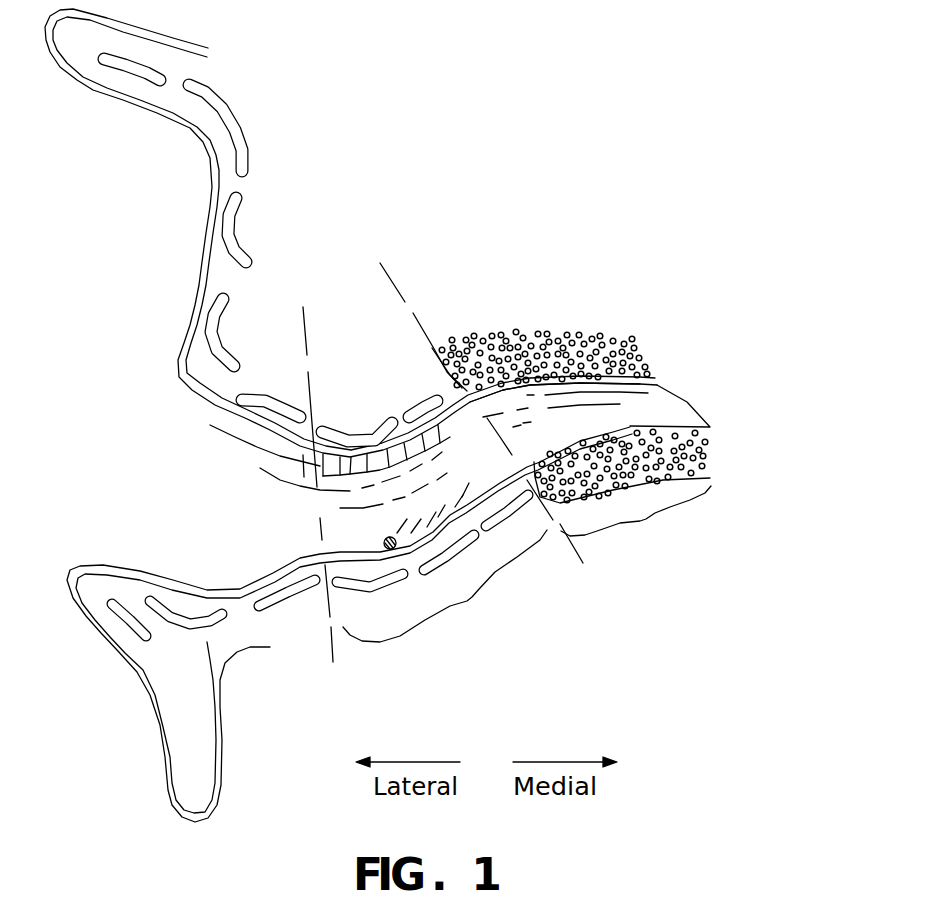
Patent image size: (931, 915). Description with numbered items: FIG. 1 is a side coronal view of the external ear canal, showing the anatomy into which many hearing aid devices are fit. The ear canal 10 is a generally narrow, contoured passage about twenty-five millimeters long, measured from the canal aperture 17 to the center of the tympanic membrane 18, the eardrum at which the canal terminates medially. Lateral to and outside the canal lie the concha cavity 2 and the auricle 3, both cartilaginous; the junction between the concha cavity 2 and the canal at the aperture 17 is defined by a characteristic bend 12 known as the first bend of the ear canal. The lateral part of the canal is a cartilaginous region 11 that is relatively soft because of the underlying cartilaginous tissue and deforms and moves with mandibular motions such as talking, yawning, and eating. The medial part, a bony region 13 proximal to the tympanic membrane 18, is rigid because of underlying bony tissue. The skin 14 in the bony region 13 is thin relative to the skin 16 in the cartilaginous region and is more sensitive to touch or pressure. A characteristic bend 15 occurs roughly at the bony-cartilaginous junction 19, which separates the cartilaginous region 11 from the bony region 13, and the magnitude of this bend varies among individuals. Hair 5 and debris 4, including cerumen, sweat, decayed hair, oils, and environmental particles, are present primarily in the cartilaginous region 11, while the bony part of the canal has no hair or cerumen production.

The concha cavity 2 is at (349, 624).
The auricle 3 is at (351, 233).
The debris 4 is at (378, 582).
The hair 5 is at (342, 513).
The ear canal 10 is at (428, 440).
The cartilaginous region 11 is at (445, 586).
The characteristic bend 12 is at (332, 476).
The bony region 13 is at (622, 492).
The skin 14 is at (555, 340).
The characteristic bend 15 is at (520, 377).
The skin 16 is at (330, 426).
The canal aperture 17 is at (309, 474).
The tympanic membrane 18 is at (630, 469).
The bony-cartilaginous junction 19 is at (423, 311).